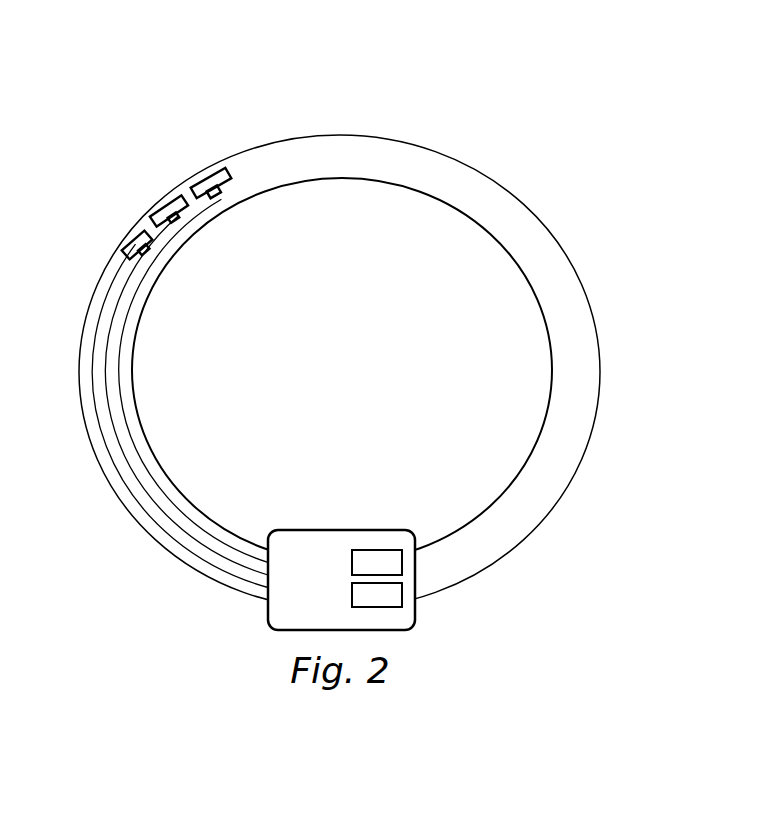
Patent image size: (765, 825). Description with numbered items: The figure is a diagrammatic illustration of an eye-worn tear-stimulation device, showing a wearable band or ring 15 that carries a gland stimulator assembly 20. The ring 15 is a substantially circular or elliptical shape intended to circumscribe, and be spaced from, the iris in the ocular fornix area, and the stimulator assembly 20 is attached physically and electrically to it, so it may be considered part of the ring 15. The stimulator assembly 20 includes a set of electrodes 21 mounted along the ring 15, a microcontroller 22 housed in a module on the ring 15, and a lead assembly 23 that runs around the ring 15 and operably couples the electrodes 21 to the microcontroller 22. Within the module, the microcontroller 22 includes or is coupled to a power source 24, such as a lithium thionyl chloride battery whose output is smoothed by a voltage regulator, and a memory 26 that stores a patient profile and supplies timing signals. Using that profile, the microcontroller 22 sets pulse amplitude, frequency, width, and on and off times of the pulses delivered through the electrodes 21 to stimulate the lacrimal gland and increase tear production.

The wearable band or ring 15 is at (434, 149).
The gland stimulator assembly 20 is at (128, 129).
The electrodes 21 is at (207, 174).
The microcontroller 22 is at (302, 528).
The lead assembly 23 is at (121, 482).
The power source 24 is at (351, 563).
The memory 26 is at (351, 595).